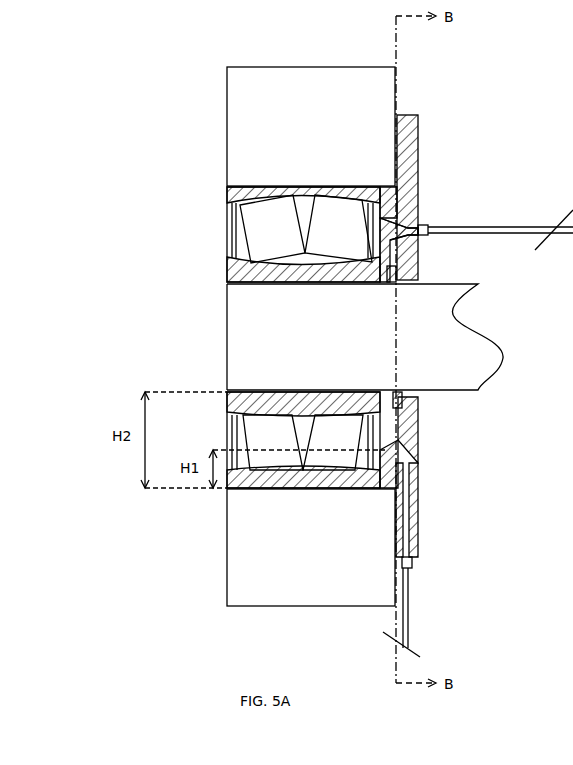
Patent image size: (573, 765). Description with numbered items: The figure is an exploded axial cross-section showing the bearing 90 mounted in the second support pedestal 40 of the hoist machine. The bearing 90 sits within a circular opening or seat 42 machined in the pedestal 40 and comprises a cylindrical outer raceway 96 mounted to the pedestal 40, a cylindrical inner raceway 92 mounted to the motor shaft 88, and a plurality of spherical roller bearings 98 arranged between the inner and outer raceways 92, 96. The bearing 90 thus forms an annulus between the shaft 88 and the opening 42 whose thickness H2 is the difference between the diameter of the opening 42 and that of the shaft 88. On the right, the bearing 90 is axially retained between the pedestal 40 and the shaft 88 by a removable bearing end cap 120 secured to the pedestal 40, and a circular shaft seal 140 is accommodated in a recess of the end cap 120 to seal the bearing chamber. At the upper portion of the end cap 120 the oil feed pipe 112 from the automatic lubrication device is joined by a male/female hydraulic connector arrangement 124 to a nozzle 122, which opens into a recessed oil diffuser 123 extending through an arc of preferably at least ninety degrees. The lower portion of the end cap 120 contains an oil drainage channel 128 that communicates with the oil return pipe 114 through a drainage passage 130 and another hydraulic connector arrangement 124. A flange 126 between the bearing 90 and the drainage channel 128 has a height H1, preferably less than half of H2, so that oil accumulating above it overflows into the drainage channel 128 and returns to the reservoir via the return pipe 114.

The second support pedestal 40 is at (319, 135).
The circular opening or seat 42 is at (237, 490).
The motor shaft 88 is at (367, 346).
The bearing 90 is at (215, 235).
The cylindrical inner raceway 92 is at (227, 278).
The cylindrical outer raceway 96 is at (227, 195).
The spherical roller bearings 98 is at (328, 212).
The oil feed pipe 112 is at (490, 226).
The oil return pipe 114 is at (420, 636).
The bearing end cap 120 is at (422, 115).
The nozzle 122 is at (443, 224).
The recessed oil diffuser 123 is at (420, 217).
The male/female hydraulic connector arrangement 124 is at (432, 236).
The flange 126 is at (420, 448).
The oil drainage channel 128 is at (416, 456).
The drainage passage 130 is at (410, 510).
The circular shaft seal 140 is at (455, 306).